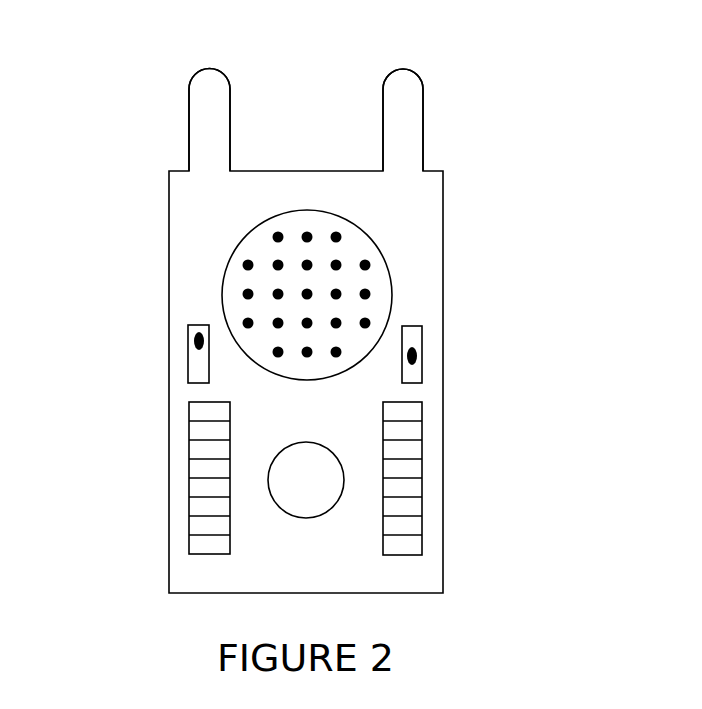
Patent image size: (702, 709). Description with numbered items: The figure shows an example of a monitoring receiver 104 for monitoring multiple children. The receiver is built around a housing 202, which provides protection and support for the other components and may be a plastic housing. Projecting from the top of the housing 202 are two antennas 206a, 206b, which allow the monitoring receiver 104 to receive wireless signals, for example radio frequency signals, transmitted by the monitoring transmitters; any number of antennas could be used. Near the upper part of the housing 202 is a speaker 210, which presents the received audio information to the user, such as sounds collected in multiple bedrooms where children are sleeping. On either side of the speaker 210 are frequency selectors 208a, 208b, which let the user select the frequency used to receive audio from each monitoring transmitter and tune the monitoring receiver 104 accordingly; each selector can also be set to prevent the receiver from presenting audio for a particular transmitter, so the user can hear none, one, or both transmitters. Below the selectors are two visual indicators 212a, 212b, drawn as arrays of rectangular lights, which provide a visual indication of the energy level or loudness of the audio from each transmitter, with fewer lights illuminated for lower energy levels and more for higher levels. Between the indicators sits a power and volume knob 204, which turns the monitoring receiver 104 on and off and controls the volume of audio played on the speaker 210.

The monitoring receiver 104 is at (460, 603).
The housing 202 is at (217, 588).
The power and volume knob 204 is at (315, 518).
The antenna 206a is at (208, 63).
The antenna 206b is at (402, 63).
The frequency selector 208a is at (183, 358).
The frequency selector 208b is at (428, 360).
The speaker 210 is at (350, 372).
The visual indicator 212a is at (184, 472).
The visual indicator 212b is at (425, 473).